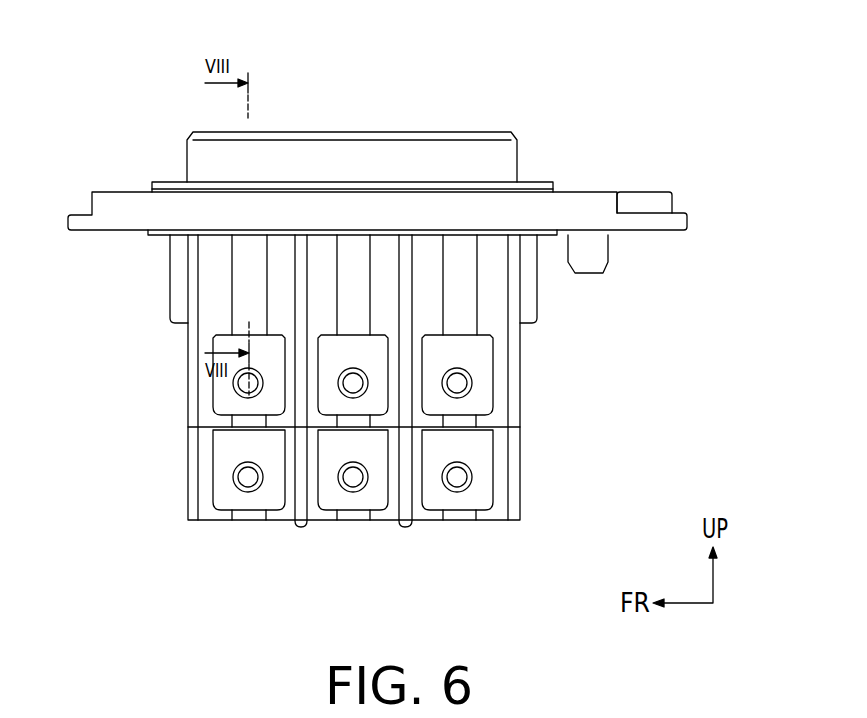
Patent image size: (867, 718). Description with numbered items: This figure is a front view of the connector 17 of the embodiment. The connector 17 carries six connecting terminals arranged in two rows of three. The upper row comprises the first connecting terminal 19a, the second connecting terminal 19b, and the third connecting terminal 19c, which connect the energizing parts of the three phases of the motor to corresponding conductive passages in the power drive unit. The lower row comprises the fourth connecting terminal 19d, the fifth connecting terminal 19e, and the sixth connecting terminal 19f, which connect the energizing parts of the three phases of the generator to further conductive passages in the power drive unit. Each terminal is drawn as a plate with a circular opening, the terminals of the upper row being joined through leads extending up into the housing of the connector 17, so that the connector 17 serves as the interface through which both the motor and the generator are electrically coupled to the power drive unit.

The connector 17 is at (574, 118).
The first connecting terminal 19a is at (248, 284).
The second connecting terminal 19b is at (355, 268).
The third connecting terminal 19c is at (458, 282).
The fourth connecting terminal 19d is at (240, 427).
The fifth connecting terminal 19e is at (350, 427).
The sixth connecting terminal 19f is at (463, 430).